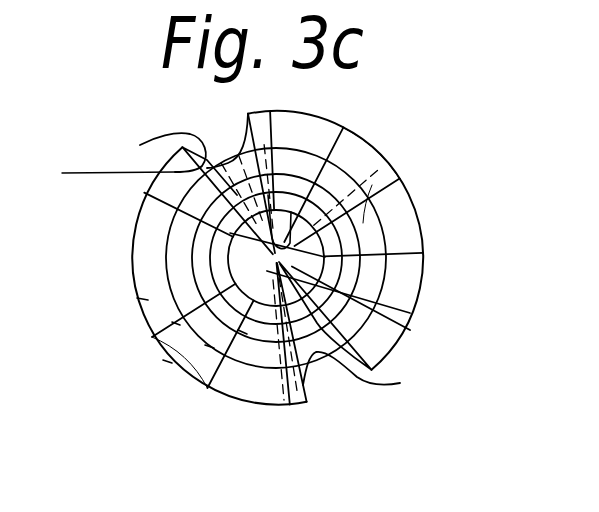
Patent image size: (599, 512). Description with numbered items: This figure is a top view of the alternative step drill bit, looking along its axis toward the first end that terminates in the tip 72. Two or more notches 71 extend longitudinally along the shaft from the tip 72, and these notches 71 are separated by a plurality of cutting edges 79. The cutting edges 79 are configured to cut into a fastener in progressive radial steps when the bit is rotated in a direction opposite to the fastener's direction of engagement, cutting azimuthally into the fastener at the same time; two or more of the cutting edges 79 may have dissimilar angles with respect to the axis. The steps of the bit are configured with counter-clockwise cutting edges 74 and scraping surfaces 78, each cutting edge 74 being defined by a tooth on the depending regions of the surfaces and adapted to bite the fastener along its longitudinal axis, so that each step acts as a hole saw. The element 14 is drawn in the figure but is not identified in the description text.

The disc 14 is at (183, 213).
The lifted tab segment 71 is at (230, 148).
The outer ring portion 72 is at (353, 153).
The ring groove 74 is at (180, 328).
The radial slit 78 is at (363, 223).
The tab edge 79 is at (140, 145).